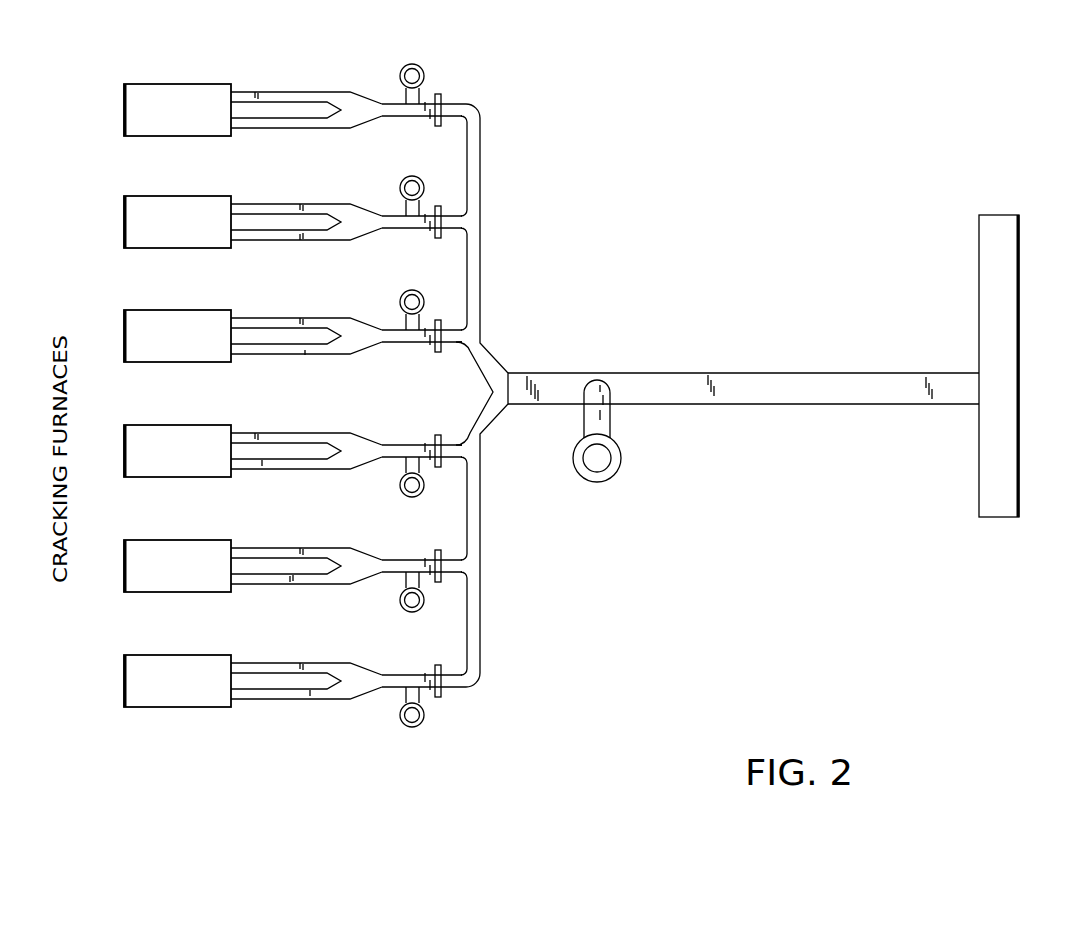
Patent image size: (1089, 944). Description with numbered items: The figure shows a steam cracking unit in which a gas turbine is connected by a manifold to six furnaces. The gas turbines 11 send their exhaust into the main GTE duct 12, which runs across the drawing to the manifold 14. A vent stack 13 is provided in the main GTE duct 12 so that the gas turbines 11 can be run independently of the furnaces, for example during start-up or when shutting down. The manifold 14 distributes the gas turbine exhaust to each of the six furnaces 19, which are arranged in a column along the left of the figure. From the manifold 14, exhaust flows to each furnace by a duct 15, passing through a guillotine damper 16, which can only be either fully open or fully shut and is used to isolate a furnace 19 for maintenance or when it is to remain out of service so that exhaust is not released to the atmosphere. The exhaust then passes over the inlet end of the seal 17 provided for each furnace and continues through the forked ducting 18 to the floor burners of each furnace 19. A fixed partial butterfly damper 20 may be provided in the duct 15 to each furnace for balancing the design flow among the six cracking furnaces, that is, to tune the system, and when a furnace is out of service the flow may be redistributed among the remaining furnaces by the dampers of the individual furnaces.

The gas turbines 11 is at (1020, 348).
The main GTE duct 12 is at (756, 371).
The vent stack 13 is at (596, 483).
The manifold 14 is at (482, 258).
The duct 15 is at (478, 103).
The guillotine damper 16 is at (440, 100).
The seal 17 is at (403, 92).
The forked ducting 18 is at (303, 90).
The furnace 19 is at (123, 113).
The fixed partial butterfly damper 20 is at (428, 115).